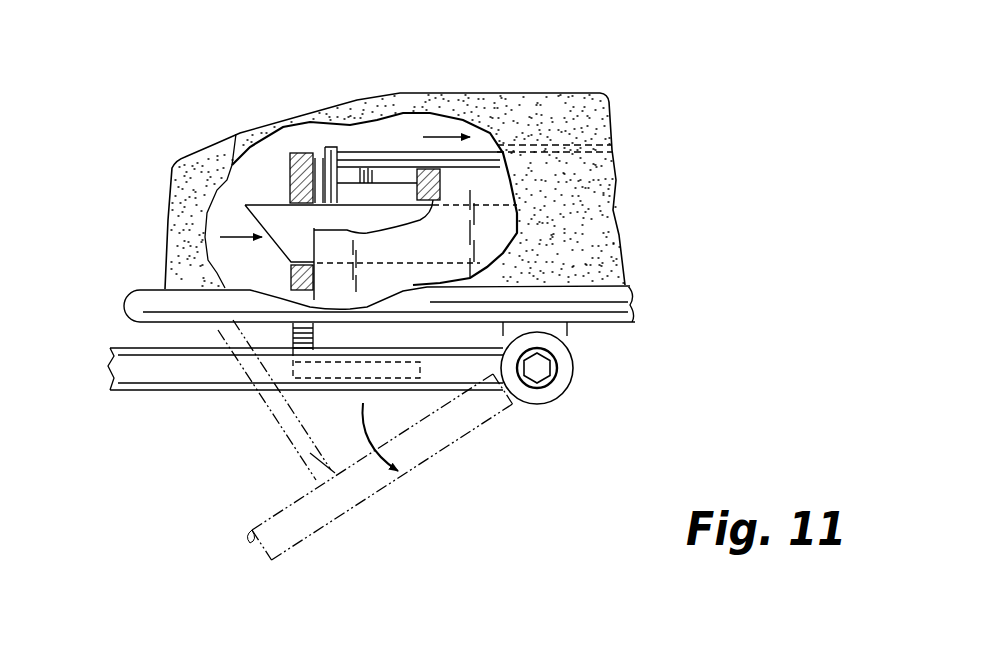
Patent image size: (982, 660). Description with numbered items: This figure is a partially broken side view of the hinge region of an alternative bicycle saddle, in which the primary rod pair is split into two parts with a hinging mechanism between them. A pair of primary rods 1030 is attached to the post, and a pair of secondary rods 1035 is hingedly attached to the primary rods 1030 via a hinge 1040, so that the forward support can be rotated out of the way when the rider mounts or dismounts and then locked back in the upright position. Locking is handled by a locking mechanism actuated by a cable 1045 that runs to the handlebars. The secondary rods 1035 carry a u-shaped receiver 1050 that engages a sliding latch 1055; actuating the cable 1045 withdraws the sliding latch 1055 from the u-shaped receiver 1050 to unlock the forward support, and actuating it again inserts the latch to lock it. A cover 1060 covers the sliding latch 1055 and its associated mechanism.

The primary rods 1030 is at (613, 303).
The secondary rods 1035 is at (173, 370).
The hinge 1040 is at (550, 387).
The cable 1045 is at (397, 153).
The u-shaped receiver 1050 is at (288, 180).
The sliding latch 1055 is at (273, 218).
The cover 1060 is at (153, 232).